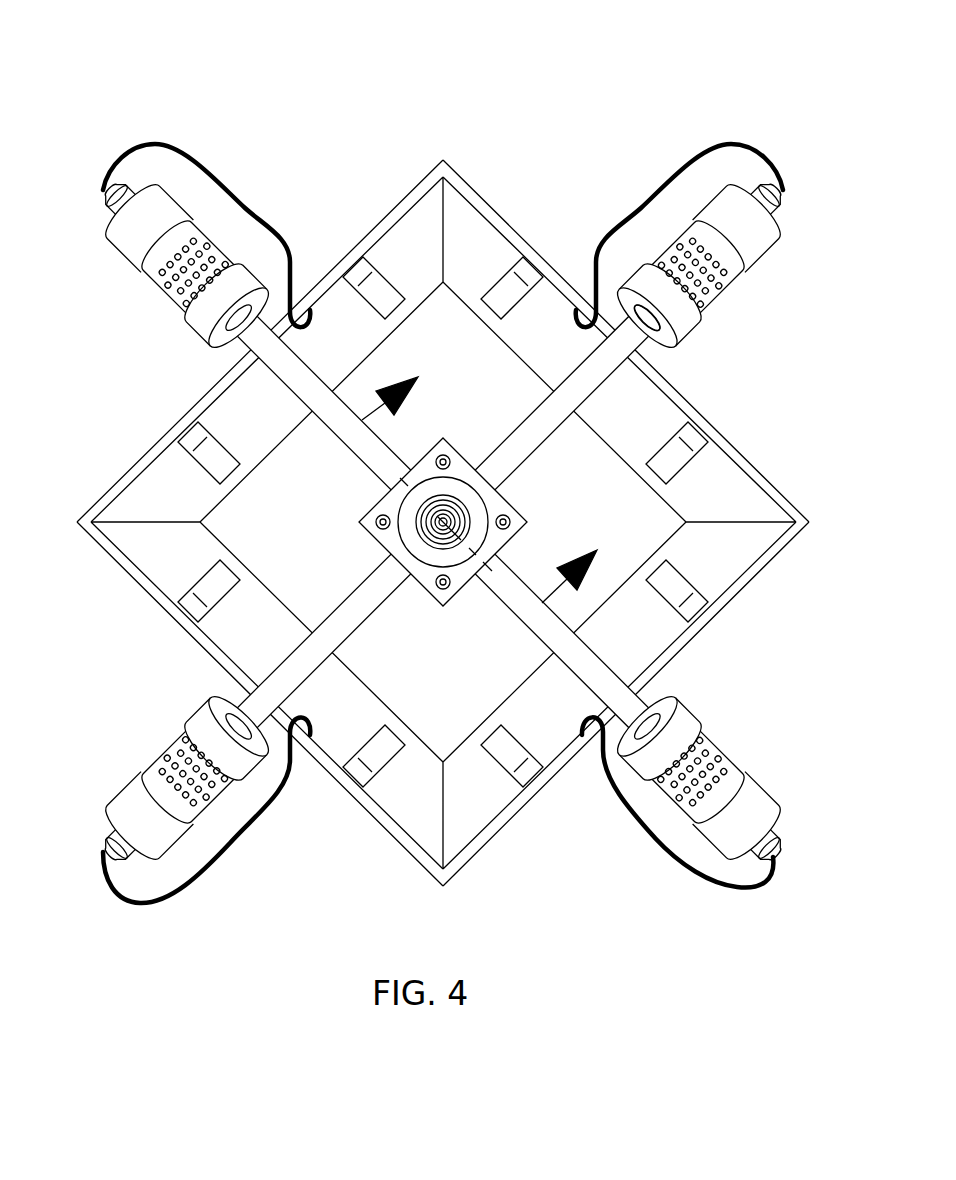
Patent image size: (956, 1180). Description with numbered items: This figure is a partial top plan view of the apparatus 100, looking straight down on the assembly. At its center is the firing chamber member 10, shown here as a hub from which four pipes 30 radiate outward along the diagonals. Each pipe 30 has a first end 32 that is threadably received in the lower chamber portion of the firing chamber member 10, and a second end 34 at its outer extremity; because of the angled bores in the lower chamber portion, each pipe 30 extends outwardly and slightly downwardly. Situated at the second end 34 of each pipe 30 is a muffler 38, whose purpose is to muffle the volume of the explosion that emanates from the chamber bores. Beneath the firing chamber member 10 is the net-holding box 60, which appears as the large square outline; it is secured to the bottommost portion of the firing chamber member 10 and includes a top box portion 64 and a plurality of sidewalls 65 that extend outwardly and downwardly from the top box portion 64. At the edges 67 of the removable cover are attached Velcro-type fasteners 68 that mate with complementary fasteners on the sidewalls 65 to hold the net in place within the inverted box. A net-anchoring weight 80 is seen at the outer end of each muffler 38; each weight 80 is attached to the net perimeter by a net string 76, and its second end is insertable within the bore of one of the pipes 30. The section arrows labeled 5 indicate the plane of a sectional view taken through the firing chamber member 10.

The apparatus 100 is at (441, 487).
The firing chamber member 10 is at (405, 513).
The pipe 30 is at (524, 432).
The first end 32 is at (492, 478).
The second end 34 is at (637, 340).
The muffler 38 is at (167, 293).
The net-holding box 60 is at (417, 257).
The top box portion 64 is at (430, 760).
The sidewalls 65 is at (477, 817).
The edges 67 is at (763, 563).
The Velcro-type fasteners 68 is at (677, 596).
The net strings 76 is at (178, 150).
The net-anchoring weight 80 is at (105, 195).
The section view indicator 5 is at (488, 478).